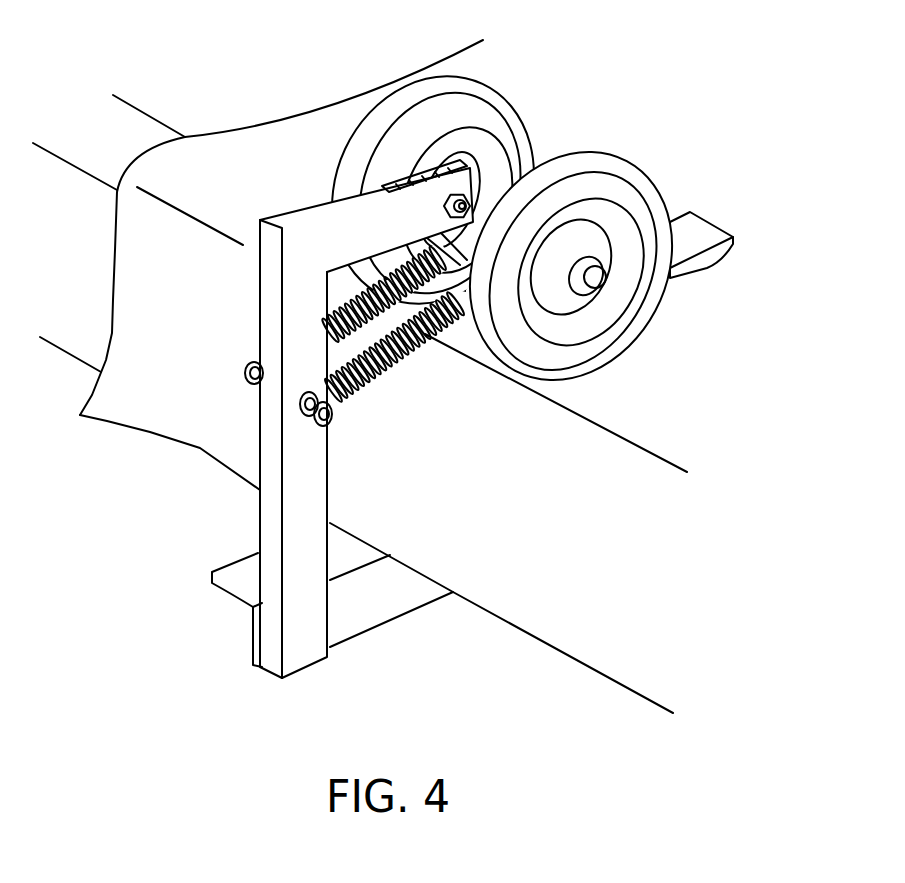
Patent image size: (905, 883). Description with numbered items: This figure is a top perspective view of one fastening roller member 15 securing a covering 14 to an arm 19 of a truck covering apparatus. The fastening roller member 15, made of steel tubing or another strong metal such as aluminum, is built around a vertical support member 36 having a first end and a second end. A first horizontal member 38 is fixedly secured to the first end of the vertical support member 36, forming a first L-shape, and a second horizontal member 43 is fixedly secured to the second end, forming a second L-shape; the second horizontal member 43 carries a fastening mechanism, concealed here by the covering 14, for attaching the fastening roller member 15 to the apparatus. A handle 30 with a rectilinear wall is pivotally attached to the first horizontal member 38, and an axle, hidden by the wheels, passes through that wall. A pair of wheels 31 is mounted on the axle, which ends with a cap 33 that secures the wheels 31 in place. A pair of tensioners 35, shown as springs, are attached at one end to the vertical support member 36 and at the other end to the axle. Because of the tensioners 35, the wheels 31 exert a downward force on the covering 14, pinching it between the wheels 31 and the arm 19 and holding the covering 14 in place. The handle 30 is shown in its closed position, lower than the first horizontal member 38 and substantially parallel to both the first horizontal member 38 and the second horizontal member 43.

The covering 14 is at (313, 128).
The fastening roller member 15 is at (491, 374).
The arm 19 is at (107, 133).
The handle 30 is at (715, 220).
The wheels 31 is at (482, 88).
The cap 33 is at (600, 278).
The tensioners 35 is at (391, 370).
The vertical support member 36 is at (267, 317).
The first horizontal member 38 is at (317, 208).
The second horizontal member 43 is at (387, 623).